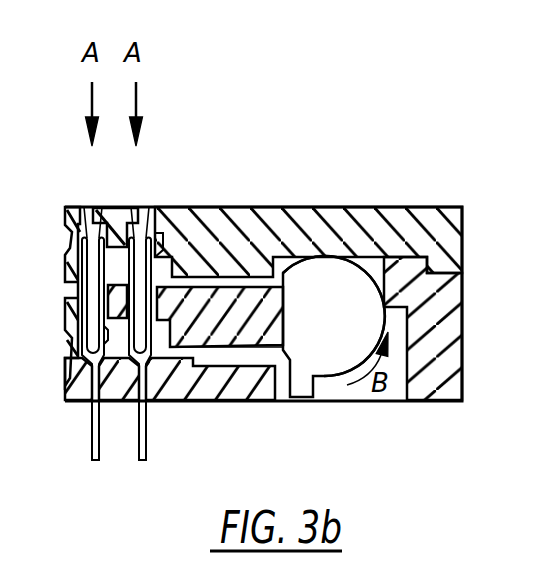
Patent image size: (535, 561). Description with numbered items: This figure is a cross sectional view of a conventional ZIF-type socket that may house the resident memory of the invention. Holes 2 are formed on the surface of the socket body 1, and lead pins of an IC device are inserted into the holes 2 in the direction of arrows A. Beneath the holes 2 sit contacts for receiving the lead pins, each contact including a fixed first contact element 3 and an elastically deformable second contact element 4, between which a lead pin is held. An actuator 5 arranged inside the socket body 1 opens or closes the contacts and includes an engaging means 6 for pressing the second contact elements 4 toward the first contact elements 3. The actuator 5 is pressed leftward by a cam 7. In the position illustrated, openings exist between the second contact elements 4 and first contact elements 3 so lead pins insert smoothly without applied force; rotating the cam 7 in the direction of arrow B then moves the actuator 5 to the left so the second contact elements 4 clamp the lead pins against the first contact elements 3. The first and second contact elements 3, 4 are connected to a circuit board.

The socket body 1 is at (470, 348).
The holes 2 is at (133, 207).
The first contact element 3 is at (160, 280).
The second contact element 4 is at (158, 248).
The actuator 5 is at (237, 346).
The engaging means 6 is at (121, 370).
The cam 7 is at (328, 357).